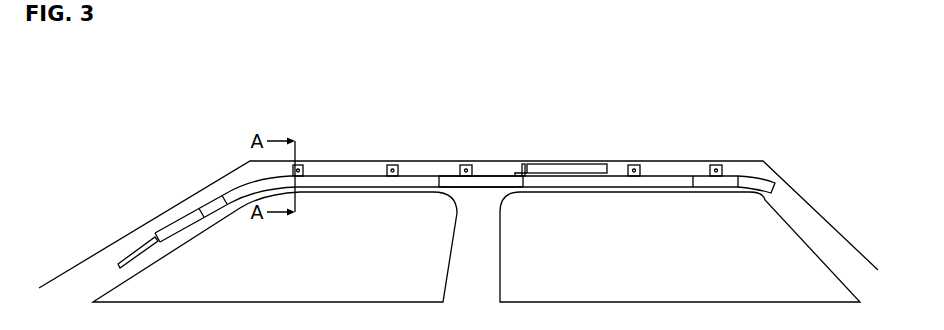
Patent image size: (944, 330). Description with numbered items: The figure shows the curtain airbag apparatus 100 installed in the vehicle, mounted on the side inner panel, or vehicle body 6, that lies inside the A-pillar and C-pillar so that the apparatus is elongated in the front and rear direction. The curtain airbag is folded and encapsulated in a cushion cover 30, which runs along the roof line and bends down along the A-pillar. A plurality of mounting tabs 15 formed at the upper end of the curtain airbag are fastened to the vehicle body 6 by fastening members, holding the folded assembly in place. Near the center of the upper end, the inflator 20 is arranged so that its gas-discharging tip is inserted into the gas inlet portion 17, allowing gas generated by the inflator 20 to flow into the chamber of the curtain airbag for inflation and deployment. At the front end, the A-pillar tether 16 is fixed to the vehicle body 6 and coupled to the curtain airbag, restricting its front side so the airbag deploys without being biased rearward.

The side inner panel 6 is at (694, 170).
The mounting tabs 15 is at (303, 164).
The A-pillar tether 16 is at (135, 253).
The gas inlet portion 17 is at (493, 176).
The inflator 20 is at (568, 169).
The cushion cover 30 is at (413, 182).
The curtain airbag apparatus 100 is at (341, 175).